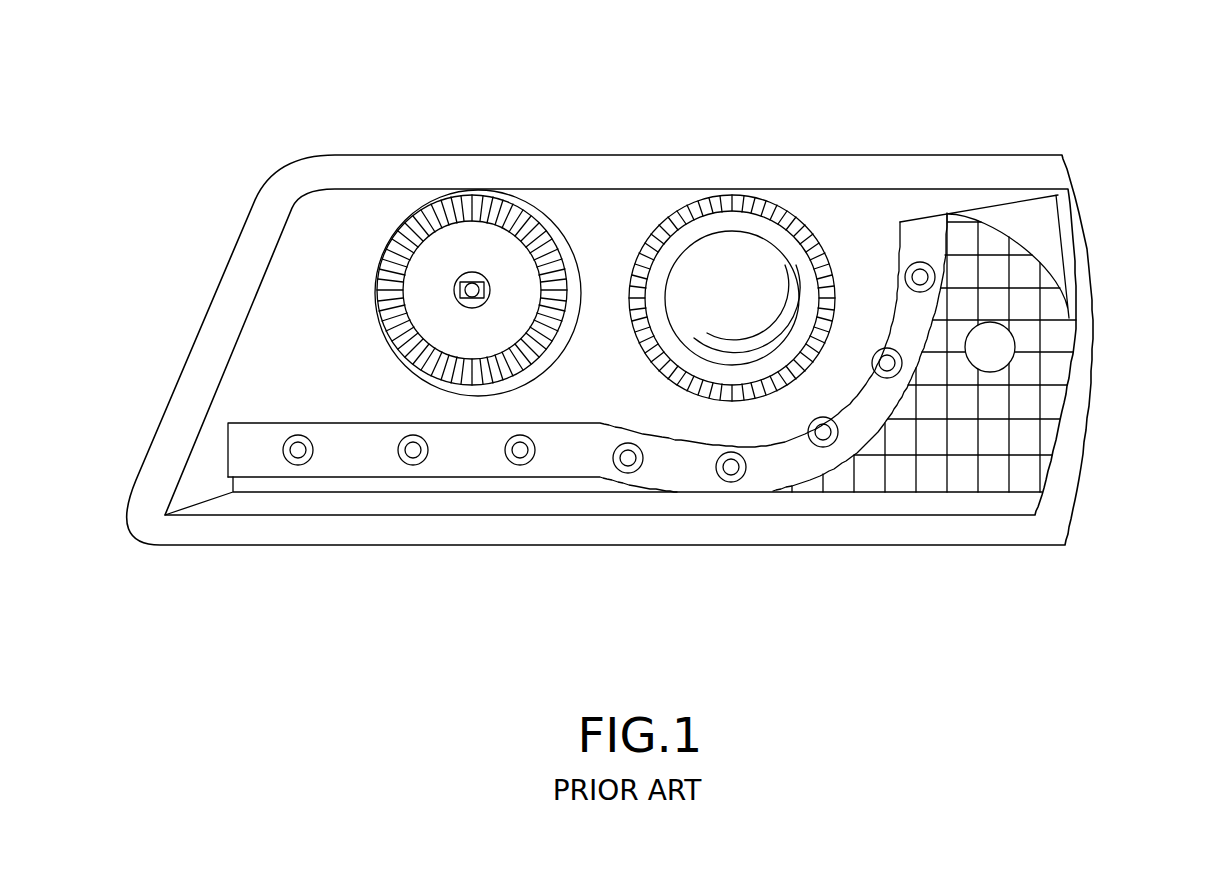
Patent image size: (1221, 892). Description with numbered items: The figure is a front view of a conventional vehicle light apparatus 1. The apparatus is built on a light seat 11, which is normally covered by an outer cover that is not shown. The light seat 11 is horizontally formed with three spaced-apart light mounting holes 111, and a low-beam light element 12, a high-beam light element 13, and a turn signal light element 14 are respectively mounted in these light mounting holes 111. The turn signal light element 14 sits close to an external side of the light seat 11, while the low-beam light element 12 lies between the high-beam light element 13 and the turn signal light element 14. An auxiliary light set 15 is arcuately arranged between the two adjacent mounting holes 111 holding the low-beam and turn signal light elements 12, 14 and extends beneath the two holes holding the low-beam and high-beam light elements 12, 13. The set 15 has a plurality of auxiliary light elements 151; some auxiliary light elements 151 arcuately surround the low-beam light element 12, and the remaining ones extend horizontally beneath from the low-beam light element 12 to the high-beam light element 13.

The vehicle light apparatus 1 is at (659, 347).
The light seat 11 is at (982, 172).
The light mounting holes 111 is at (1050, 337).
The low-beam light element 12 is at (728, 247).
The high-beam light element 13 is at (471, 270).
The turn signal light element 14 is at (985, 335).
The auxiliary light set 15 is at (876, 437).
The auxiliary light elements 151 is at (627, 461).